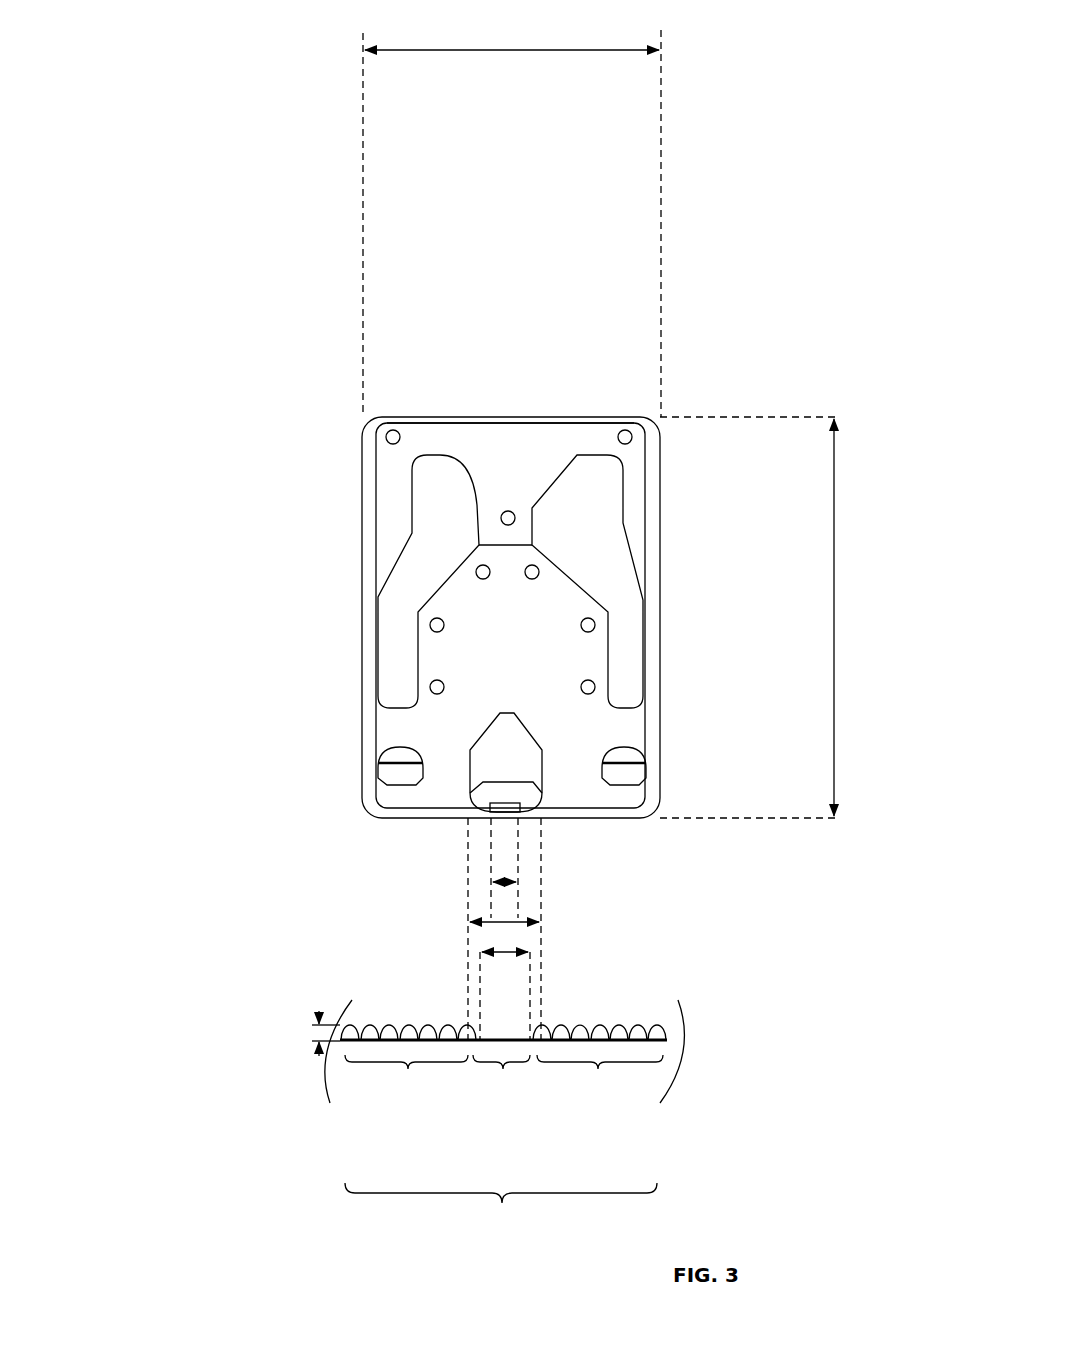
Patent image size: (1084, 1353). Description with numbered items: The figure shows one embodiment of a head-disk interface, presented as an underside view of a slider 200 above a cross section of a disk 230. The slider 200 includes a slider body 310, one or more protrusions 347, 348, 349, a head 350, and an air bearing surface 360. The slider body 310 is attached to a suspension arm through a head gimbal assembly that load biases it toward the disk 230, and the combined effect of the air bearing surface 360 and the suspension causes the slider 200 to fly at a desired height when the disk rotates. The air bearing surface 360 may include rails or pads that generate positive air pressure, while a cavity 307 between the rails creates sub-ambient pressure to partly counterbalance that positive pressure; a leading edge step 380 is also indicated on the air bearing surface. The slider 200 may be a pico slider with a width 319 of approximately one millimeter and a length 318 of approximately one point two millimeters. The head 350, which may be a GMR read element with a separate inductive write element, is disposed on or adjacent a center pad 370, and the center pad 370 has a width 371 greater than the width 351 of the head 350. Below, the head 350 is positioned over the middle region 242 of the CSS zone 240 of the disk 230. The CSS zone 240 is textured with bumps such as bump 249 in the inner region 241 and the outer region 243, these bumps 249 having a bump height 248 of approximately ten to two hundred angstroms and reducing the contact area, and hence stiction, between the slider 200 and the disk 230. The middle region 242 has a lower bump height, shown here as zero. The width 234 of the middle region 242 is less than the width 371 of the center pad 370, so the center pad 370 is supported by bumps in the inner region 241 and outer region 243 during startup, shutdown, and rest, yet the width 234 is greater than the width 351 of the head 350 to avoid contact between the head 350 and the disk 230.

The slider 200 is at (275, 610).
The slider body 310 is at (353, 637).
The length 318 is at (834, 587).
The width 319 is at (612, 50).
The protrusion 347 is at (385, 430).
The protrusion 348 is at (478, 562).
The protrusion 349 is at (498, 500).
The cavity 307 is at (497, 445).
The leading edge step 380 is at (535, 447).
The air bearing surface 360 is at (600, 490).
The head 350 is at (513, 790).
The center pad 370 is at (468, 797).
The width of head 351 is at (507, 878).
The width of center pad 371 is at (490, 927).
The width of middle region 234 is at (510, 948).
The bump 249 is at (618, 1023).
The disk 230 is at (716, 1018).
The bump height 248 is at (317, 1021).
The inner region 241 is at (406, 1103).
The middle region 242 is at (503, 1103).
The outer region 243 is at (600, 1103).
The CSS zone 240 is at (501, 1220).